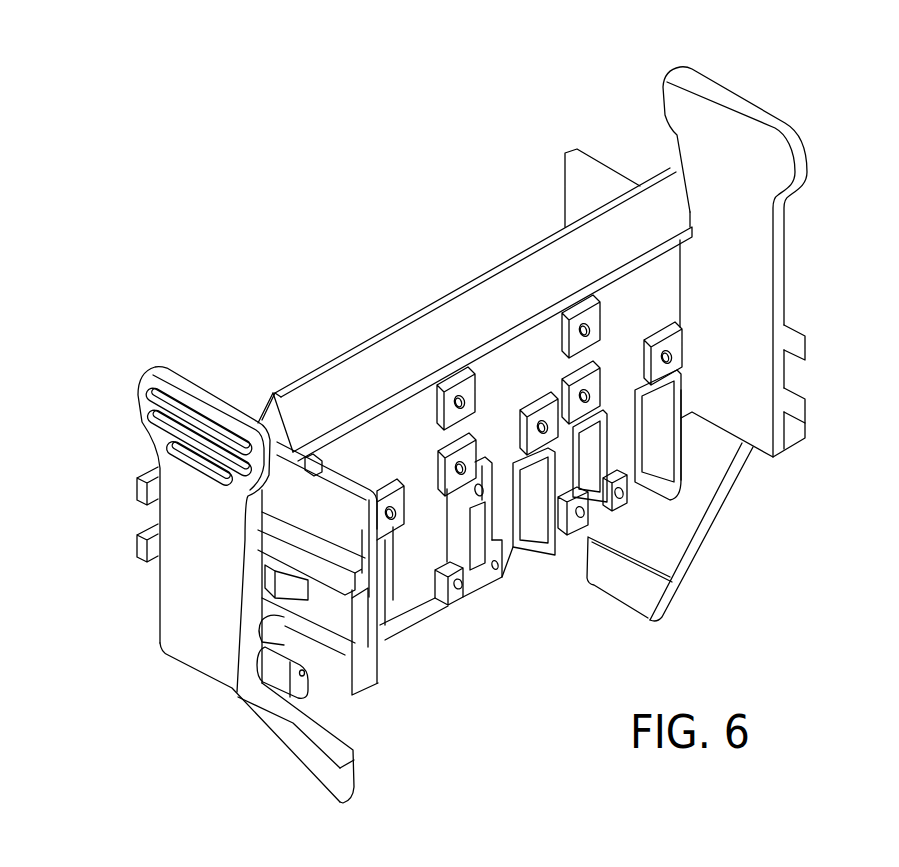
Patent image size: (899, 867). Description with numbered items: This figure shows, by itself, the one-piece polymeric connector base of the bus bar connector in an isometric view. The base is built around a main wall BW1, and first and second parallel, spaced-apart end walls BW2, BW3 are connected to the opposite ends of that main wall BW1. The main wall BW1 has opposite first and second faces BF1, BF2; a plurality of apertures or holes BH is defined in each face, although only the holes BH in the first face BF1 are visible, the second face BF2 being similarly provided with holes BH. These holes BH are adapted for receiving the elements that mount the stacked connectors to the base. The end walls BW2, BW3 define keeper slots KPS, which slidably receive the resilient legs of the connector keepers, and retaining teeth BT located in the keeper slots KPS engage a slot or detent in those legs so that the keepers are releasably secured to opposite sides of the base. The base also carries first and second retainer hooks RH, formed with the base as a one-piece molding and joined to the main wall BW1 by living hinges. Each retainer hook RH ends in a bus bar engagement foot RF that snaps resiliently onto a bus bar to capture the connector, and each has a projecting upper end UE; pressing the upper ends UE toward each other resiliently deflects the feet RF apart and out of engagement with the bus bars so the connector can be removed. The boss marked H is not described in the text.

The upper end UE is at (177, 373).
The main wall BW1 is at (548, 238).
The second face BF2 is at (303, 352).
The holes BH is at (592, 330).
The hole H is at (680, 358).
The first end wall BW2 is at (745, 292).
The keeper slots KPS is at (148, 530).
The second end wall BW3 is at (327, 512).
The retaining teeth BT is at (287, 588).
The first face BF1 is at (416, 556).
The bus bar engagement foot RF is at (340, 752).
The retainer hook RH is at (243, 722).